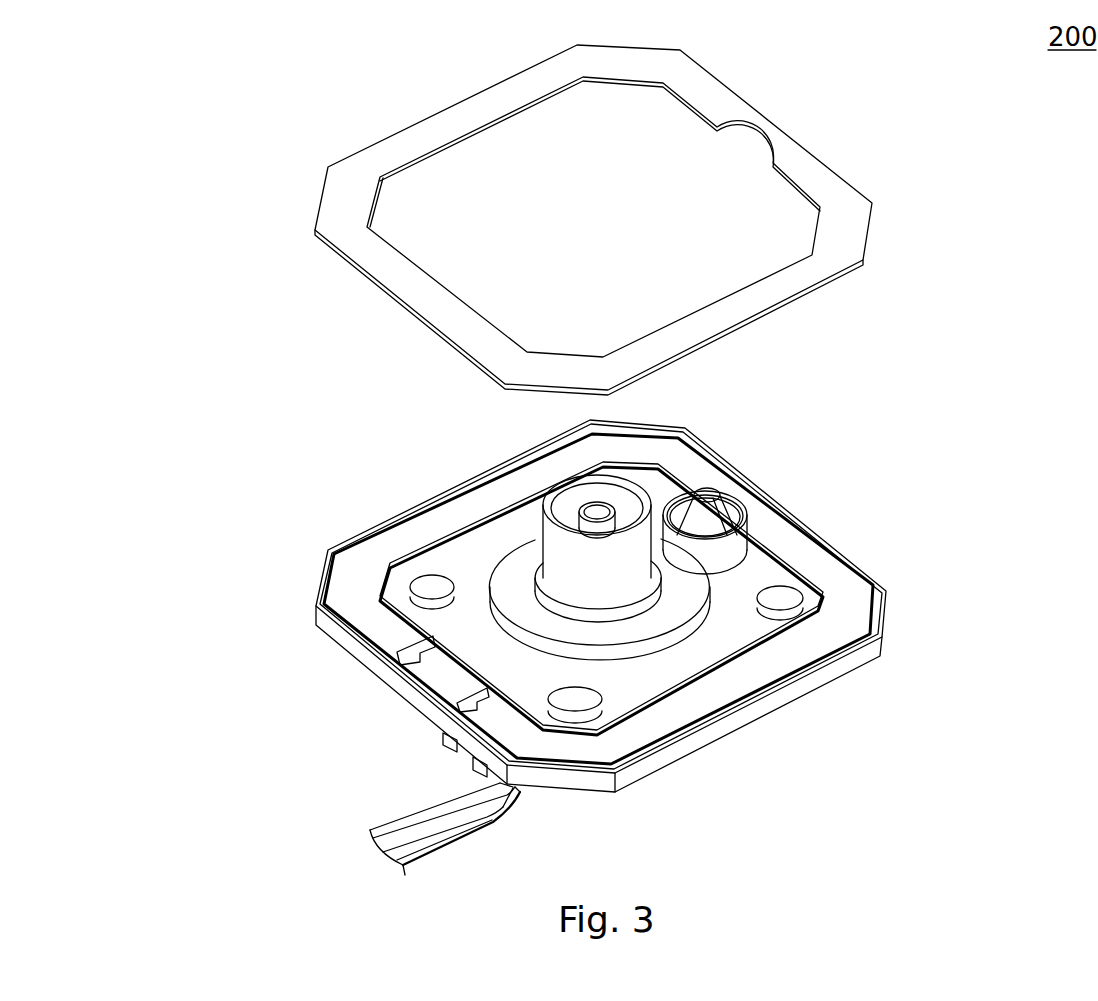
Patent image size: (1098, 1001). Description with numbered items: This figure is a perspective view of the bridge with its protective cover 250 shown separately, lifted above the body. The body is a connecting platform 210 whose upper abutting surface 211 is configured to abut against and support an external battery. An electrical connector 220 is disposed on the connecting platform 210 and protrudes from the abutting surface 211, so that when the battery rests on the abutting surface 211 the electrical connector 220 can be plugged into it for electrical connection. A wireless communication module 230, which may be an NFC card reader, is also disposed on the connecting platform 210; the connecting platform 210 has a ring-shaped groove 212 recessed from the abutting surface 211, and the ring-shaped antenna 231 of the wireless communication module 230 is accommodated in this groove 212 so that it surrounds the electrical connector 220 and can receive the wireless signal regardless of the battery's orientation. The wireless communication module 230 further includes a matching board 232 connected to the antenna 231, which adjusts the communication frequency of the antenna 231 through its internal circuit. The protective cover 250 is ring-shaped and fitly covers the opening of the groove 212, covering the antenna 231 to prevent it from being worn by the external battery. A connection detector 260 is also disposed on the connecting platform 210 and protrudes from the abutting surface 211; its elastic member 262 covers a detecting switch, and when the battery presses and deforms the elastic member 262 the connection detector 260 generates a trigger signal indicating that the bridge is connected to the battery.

The connecting platform 210 is at (313, 597).
The abutting surface 211 is at (488, 545).
The groove 212 is at (327, 583).
The electrical connector 220 is at (570, 483).
The wireless communication module 230 is at (280, 677).
The antenna 231 is at (397, 638).
The matching board 232 is at (435, 680).
The protective cover 250 is at (822, 170).
The connection detector 260 is at (716, 478).
The elastic member 262 is at (721, 497).